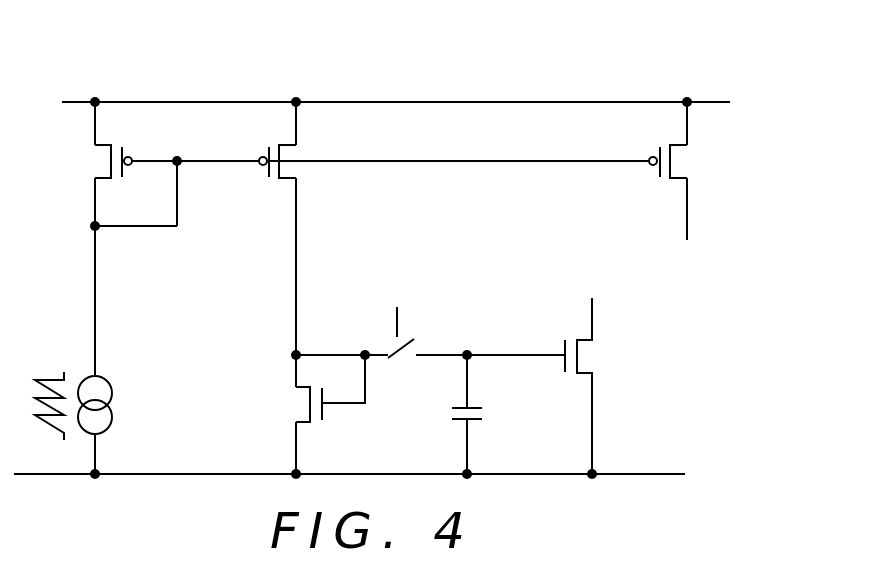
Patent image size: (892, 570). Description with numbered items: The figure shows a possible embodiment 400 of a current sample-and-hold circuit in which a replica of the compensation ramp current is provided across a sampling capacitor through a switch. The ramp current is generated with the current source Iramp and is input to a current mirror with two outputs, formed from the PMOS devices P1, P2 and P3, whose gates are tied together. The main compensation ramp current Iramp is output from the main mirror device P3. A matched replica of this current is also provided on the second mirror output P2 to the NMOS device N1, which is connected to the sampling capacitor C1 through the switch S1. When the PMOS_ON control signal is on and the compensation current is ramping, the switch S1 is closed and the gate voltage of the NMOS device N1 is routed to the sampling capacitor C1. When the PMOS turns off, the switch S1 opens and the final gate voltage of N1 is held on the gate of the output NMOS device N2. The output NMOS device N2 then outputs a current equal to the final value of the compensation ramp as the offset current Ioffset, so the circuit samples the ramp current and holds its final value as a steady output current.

The current sample-and-hold circuit embodiment 400 is at (167, 47).
The current mirror device P1 is at (103, 161).
The current mirror replica output device P2 is at (294, 145).
The main mirror device P3 is at (675, 161).
The NMOS device N1 is at (321, 388).
The output NMOS device N2 is at (587, 386).
The switch S1 is at (401, 343).
The sampling capacitor C1 is at (481, 414).
The compensation ramp current Iramp is at (372, 342).
The offset output current Ioffset is at (592, 284).